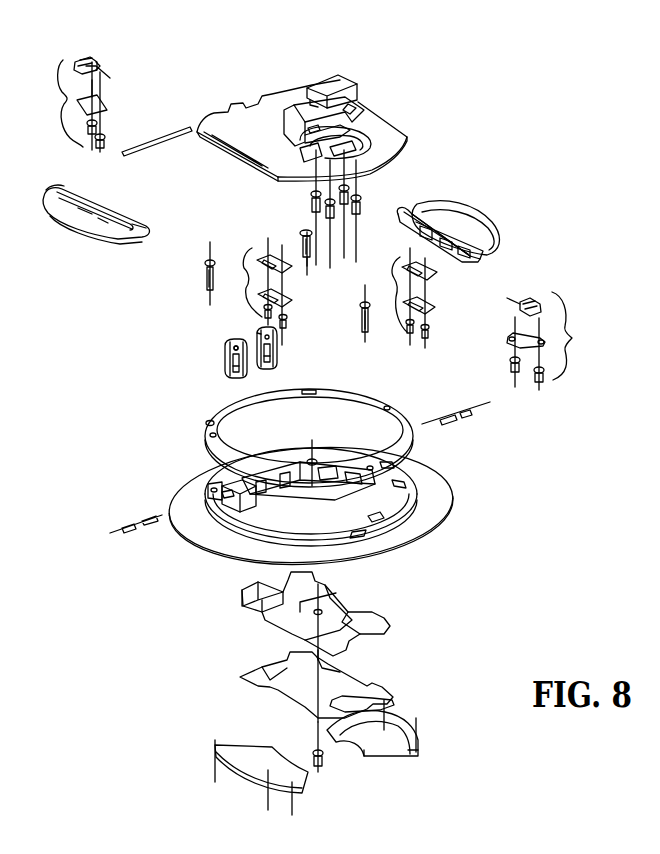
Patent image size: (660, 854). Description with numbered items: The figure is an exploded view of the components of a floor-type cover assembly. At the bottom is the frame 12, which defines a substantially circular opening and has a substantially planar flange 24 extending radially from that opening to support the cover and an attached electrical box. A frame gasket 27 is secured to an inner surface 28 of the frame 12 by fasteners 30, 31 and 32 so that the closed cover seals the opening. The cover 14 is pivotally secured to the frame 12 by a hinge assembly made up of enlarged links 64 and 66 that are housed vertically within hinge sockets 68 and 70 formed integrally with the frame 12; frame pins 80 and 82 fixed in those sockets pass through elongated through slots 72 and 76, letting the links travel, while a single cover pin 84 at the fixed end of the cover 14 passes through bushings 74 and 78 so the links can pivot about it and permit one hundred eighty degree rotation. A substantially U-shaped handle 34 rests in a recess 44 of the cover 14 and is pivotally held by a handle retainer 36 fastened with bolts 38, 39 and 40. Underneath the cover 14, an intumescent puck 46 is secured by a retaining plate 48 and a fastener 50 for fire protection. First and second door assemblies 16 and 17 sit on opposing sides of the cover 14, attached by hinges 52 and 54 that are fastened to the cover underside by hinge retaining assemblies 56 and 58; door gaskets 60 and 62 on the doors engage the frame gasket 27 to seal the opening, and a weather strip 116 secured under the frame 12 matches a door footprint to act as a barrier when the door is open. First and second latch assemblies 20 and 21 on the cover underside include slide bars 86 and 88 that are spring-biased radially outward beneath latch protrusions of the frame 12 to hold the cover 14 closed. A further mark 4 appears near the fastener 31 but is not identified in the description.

The screw 4 is at (316, 254).
The frame 12 is at (473, 518).
The cover 14 is at (302, 806).
The first door assembly 16 is at (71, 240).
The second door assembly 17 is at (482, 211).
The first latch assembly 20 is at (554, 341).
The second latch assembly 21 is at (72, 106).
The flange 24 is at (205, 533).
The frame gasket 27 is at (367, 396).
The inner surface 28 is at (407, 487).
The fastener 30 is at (207, 268).
The fastener 31 is at (314, 268).
The fastener 32 is at (363, 330).
The handle 34 is at (358, 104).
The handle retainer 36 is at (346, 80).
The bolt 38 is at (310, 207).
The bolt 39 is at (350, 190).
The bolt 40 is at (360, 206).
The recess 44 is at (350, 143).
The intumescent puck 46 is at (392, 628).
The retaining plate 48 is at (378, 688).
The fastener 50 is at (323, 760).
The hinge 52 is at (108, 207).
The hinge 54 is at (450, 262).
The hinge retaining assembly 56 is at (256, 291).
The hinge retaining assembly 58 is at (406, 298).
The door gasket 60 is at (145, 226).
The door gasket 62 is at (475, 260).
The enlarged link 64 is at (236, 378).
The enlarged link 66 is at (267, 369).
The hinge socket 68 is at (244, 505).
The hinge socket 70 is at (284, 493).
The elongated through slot 72 is at (226, 368).
The bushing 74 is at (226, 349).
The elongated through slot 76 is at (272, 355).
The bushing 78 is at (257, 333).
The frame pin 80 is at (133, 528).
The frame pin 82 is at (463, 409).
The cover pin 84 is at (162, 136).
The slide bar 86 is at (534, 300).
The slide bar 88 is at (92, 62).
The weather strip 116 is at (396, 758).